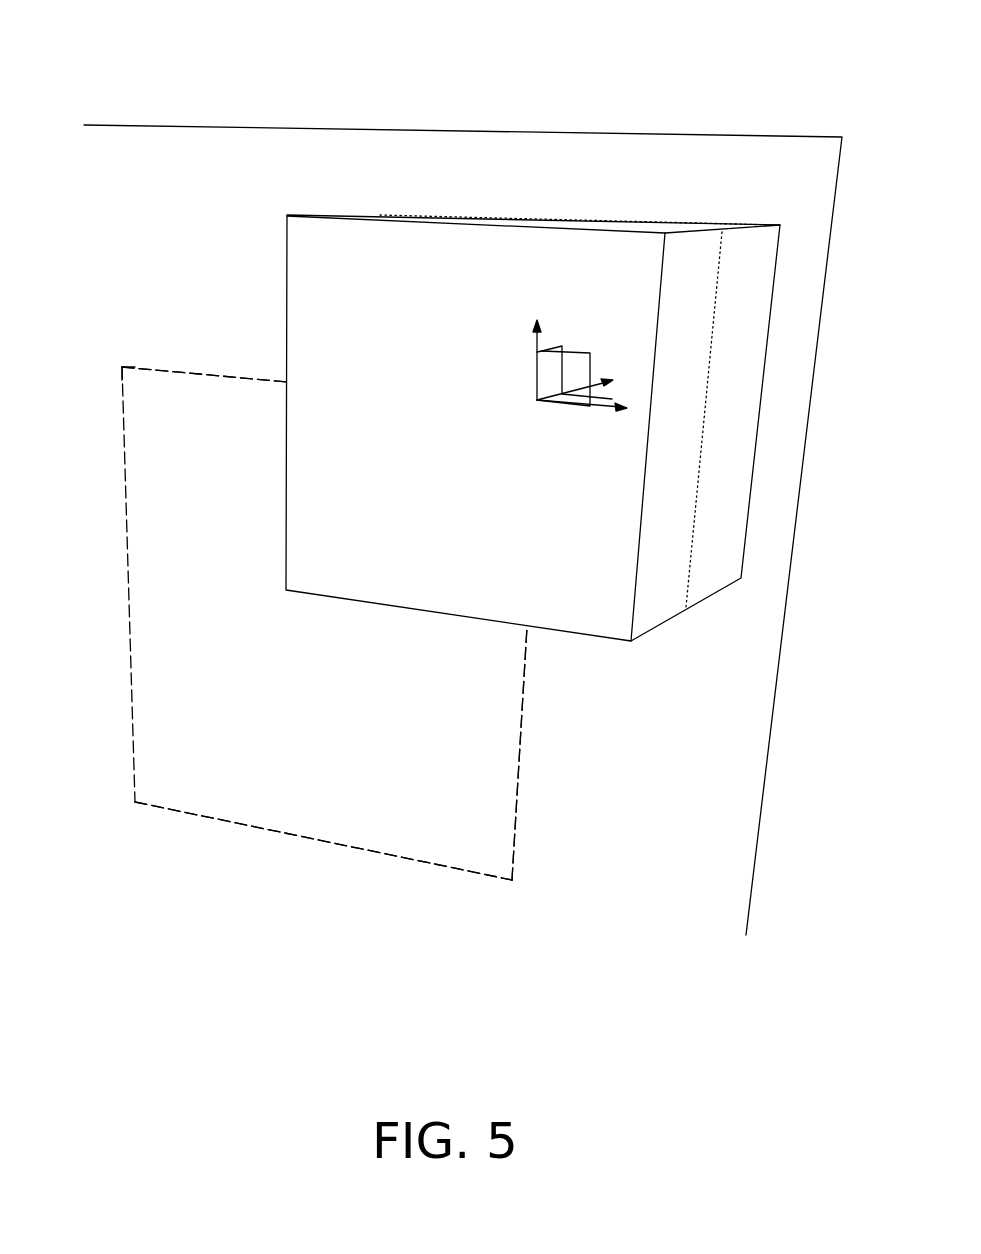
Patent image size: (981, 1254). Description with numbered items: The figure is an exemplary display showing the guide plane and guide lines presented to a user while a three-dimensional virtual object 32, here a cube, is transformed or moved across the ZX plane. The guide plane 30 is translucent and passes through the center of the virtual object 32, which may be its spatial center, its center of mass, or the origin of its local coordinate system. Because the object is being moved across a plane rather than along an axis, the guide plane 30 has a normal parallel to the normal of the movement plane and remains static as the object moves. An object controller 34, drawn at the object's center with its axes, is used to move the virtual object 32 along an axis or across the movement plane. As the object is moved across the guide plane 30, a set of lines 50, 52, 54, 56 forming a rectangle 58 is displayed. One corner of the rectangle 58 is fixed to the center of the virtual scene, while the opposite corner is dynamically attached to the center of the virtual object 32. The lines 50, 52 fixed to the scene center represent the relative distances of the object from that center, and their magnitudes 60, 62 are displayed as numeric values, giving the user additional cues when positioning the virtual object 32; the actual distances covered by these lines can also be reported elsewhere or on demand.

The guide plane 30 is at (738, 165).
The 3D virtual object 32 is at (750, 505).
The object controller 34 is at (573, 355).
The line 50 is at (124, 462).
The line 52 is at (212, 819).
The line 54 is at (520, 748).
The line 56 is at (200, 374).
The rectangle 58 is at (116, 360).
The magnitude 60 is at (200, 588).
The magnitude 62 is at (340, 794).